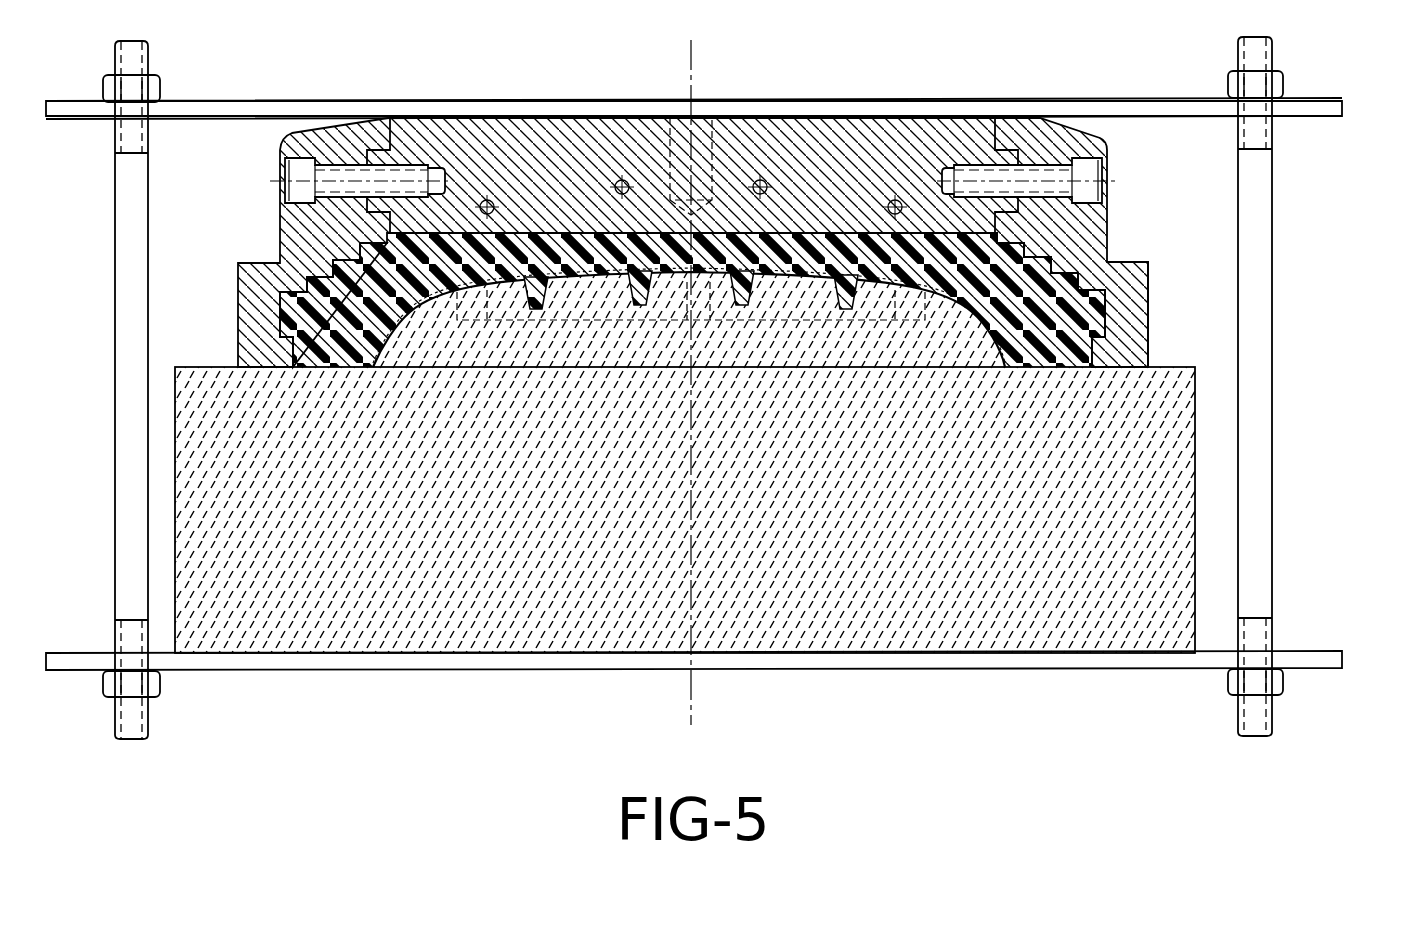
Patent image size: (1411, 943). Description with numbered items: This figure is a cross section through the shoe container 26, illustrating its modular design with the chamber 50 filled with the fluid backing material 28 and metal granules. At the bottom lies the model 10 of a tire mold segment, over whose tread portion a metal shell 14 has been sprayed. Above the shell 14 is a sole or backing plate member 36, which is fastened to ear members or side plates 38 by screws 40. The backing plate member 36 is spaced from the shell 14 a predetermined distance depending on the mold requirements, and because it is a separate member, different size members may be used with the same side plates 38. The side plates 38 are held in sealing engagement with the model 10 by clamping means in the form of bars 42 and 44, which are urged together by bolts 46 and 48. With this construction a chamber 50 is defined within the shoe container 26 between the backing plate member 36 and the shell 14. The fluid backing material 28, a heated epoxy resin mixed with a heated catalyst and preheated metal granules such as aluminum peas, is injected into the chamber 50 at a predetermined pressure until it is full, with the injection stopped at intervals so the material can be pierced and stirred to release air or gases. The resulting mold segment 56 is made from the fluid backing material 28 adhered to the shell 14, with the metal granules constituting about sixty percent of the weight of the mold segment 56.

The model 10 is at (1165, 483).
The metal shell 14 is at (950, 306).
The shoe container 26 is at (783, 138).
The fluid backing material 28 is at (1083, 313).
The backing plate member 36 is at (526, 138).
The side plates 38 is at (345, 138).
The screws 40 is at (296, 175).
The bar 42 is at (1312, 102).
The bar 44 is at (1312, 652).
The bolt 46 is at (118, 370).
The bolt 48 is at (1264, 366).
The chamber 50 is at (1097, 322).
The mold segment 56 is at (833, 248).